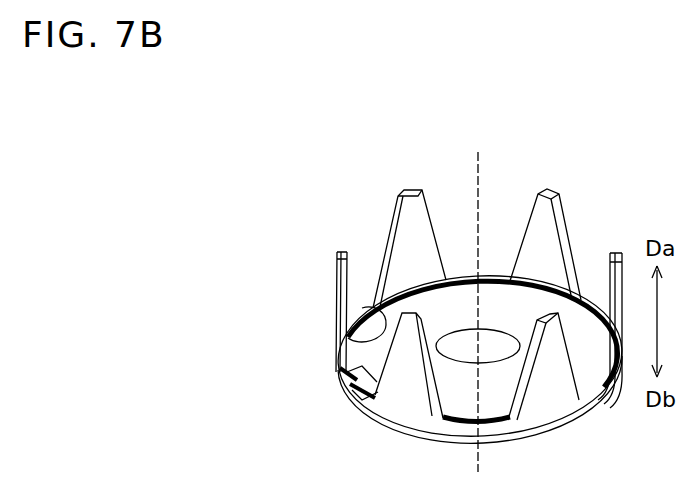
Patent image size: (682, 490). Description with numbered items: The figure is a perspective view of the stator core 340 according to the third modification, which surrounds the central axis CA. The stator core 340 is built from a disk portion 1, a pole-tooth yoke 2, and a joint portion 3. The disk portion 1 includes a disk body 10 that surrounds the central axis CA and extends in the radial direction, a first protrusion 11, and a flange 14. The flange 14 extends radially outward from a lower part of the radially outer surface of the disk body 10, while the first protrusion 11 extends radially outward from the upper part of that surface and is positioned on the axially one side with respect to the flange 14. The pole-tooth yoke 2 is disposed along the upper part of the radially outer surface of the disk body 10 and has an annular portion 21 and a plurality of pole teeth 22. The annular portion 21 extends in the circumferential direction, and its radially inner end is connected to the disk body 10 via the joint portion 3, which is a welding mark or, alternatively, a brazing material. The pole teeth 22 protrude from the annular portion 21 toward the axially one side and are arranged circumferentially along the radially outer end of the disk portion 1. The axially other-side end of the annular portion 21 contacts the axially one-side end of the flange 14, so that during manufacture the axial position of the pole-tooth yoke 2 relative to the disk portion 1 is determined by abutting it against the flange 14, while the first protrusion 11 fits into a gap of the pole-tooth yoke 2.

The stator core 340 is at (233, 198).
The disk portion 1 is at (268, 358).
The disk body 10 is at (368, 357).
The first protrusion 11 is at (364, 388).
The flange 14 is at (397, 428).
The pole-tooth yoke 2 is at (270, 178).
The annular portion 21 is at (373, 297).
The pole teeth 22 is at (412, 228).
The joint portion 3 is at (340, 346).
The central axis CA is at (478, 190).